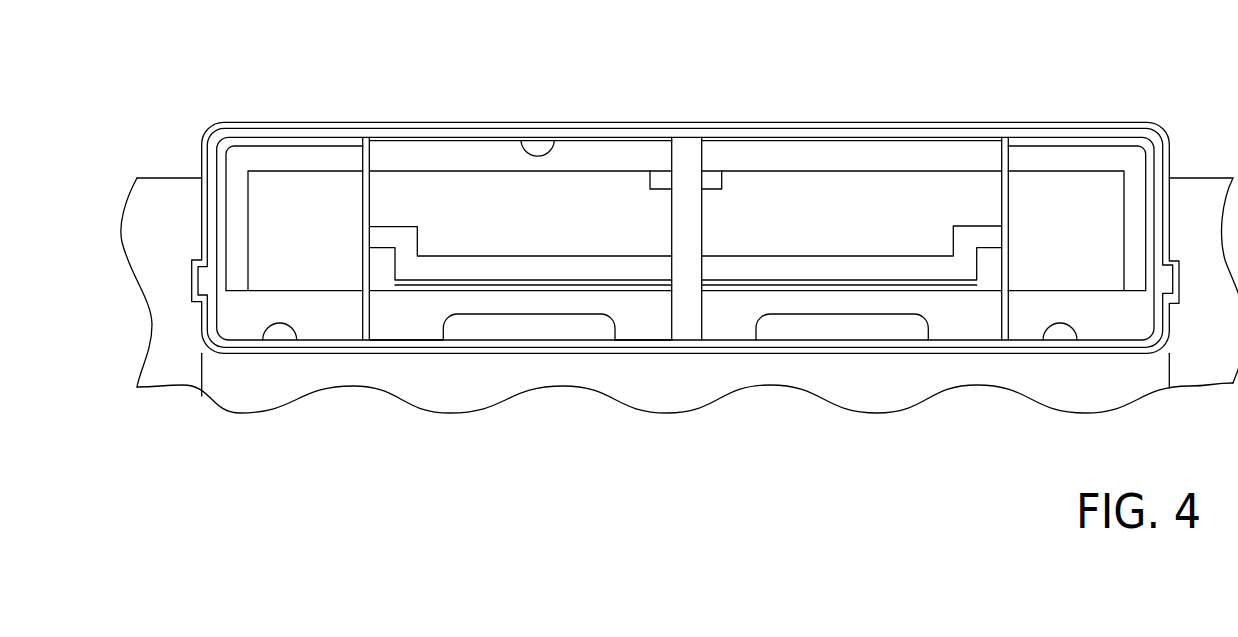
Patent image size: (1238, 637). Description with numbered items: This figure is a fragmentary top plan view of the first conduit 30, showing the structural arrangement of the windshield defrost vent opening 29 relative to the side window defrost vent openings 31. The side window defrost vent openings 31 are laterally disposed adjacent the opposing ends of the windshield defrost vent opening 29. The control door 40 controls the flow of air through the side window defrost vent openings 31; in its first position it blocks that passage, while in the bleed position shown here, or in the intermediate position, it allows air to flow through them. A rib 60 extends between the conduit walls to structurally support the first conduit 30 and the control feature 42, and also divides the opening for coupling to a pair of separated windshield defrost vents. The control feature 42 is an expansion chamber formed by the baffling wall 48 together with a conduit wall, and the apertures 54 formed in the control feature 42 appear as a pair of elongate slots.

The first conduit 30 is at (292, 121).
The windshield defrost vent opening 29 is at (554, 140).
The rib 60 is at (688, 189).
The control door 40 is at (838, 242).
The side window defrost vent openings 31 is at (263, 340).
The baffling wall 48 is at (413, 317).
The apertures 54 is at (612, 331).
The control feature 42 is at (631, 320).